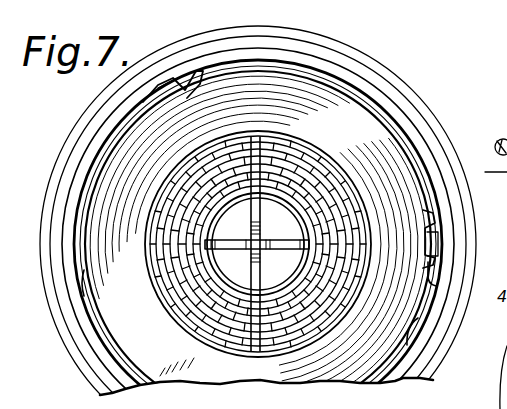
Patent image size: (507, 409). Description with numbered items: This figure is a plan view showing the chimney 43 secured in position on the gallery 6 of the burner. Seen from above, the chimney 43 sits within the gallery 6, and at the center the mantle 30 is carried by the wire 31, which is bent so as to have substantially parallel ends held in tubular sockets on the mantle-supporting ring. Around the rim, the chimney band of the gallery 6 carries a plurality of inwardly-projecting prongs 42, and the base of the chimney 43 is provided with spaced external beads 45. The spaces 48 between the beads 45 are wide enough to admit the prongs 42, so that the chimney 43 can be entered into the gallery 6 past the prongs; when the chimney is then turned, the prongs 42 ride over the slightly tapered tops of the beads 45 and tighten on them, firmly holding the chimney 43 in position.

The burner gallery 6 is at (345, 62).
The mantle 30 is at (258, 244).
The wire 31 is at (257, 244).
The prongs 42 is at (290, 169).
The chimney 43 is at (332, 127).
The external beads 45 is at (259, 303).
The spaces 48 is at (262, 74).